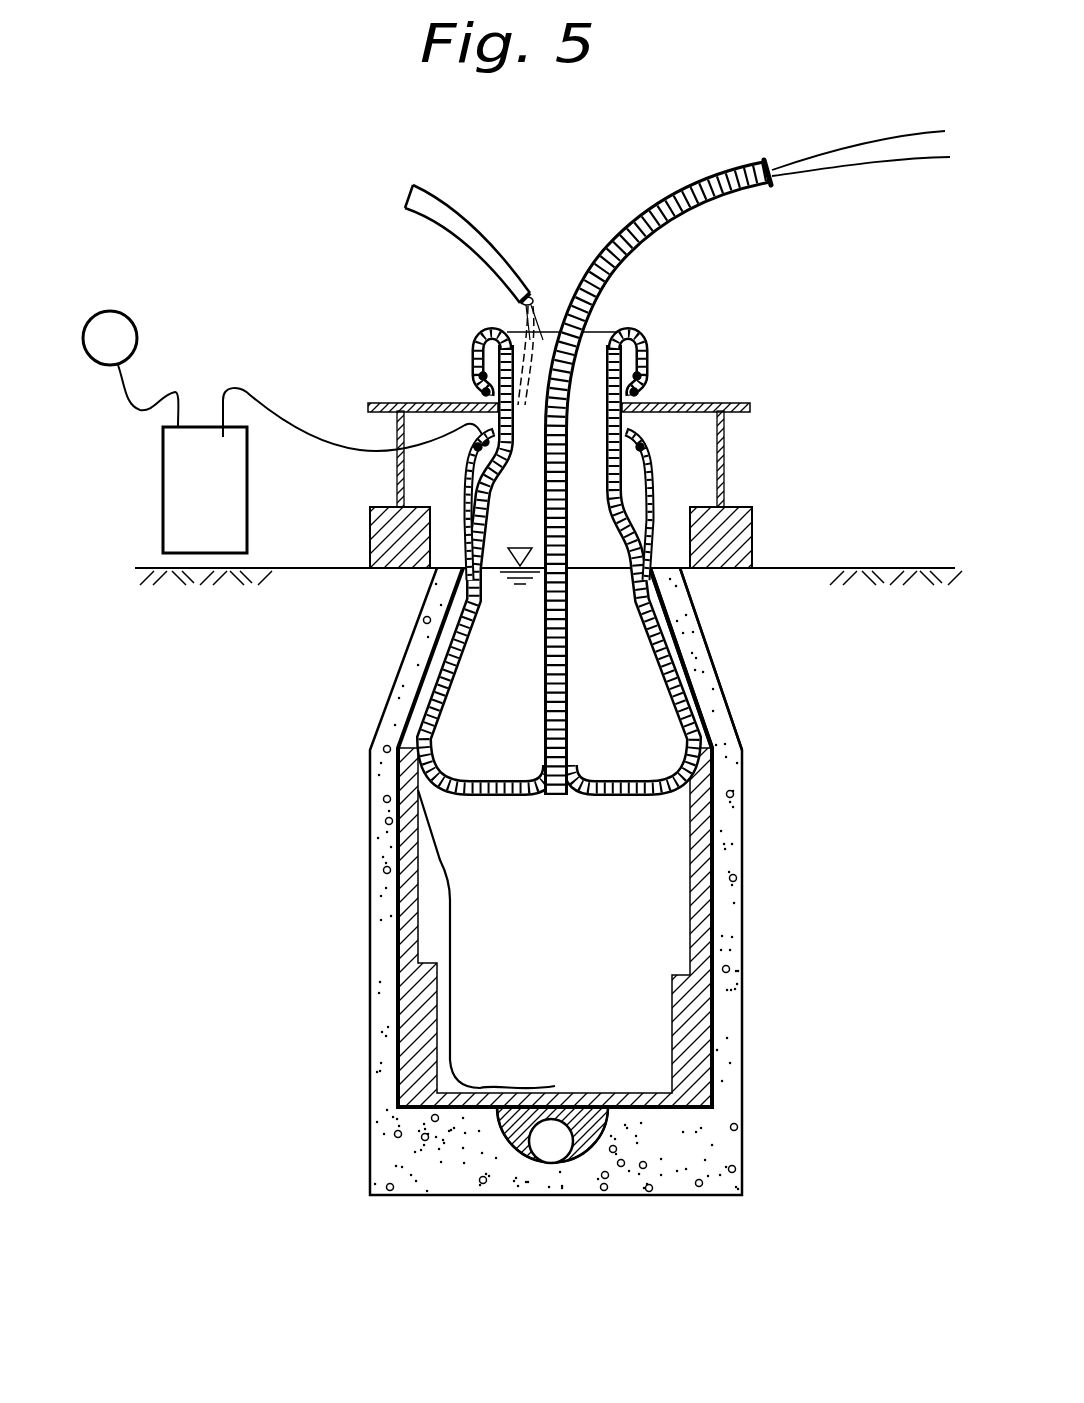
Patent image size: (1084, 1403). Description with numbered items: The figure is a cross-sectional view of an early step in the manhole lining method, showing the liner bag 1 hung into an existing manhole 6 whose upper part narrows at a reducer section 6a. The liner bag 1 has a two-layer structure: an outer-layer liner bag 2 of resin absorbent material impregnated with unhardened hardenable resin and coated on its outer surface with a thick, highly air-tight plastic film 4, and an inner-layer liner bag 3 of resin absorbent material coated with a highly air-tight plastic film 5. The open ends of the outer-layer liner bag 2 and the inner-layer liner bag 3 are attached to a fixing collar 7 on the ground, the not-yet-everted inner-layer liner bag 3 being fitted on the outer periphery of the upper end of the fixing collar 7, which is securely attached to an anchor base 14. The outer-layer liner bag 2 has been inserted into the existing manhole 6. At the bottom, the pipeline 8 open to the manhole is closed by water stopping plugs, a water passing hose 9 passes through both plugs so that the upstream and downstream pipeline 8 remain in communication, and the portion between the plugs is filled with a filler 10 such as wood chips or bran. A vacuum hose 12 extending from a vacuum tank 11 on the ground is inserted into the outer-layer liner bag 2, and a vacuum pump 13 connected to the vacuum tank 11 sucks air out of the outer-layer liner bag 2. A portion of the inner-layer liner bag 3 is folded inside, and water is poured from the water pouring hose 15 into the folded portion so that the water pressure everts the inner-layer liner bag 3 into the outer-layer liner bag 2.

The liner bag 1 is at (652, 464).
The outer-layer liner bag 2 is at (672, 1000).
The inner-layer liner bag 3 is at (753, 463).
The plastic film 4 is at (652, 504).
The plastic film 5 is at (628, 226).
The existing manhole 6 is at (745, 1003).
The reducer section 6a is at (718, 690).
The fixing collar 7 is at (640, 400).
The pipeline 8 is at (520, 1150).
The water passing hose 9 is at (568, 1172).
The filler 10 is at (589, 1108).
The vacuum tank 11 is at (248, 508).
The vacuum hose 12 is at (450, 960).
The vacuum pump 13 is at (133, 318).
The anchor base 14 is at (370, 546).
The water supply hose 15 is at (460, 208).